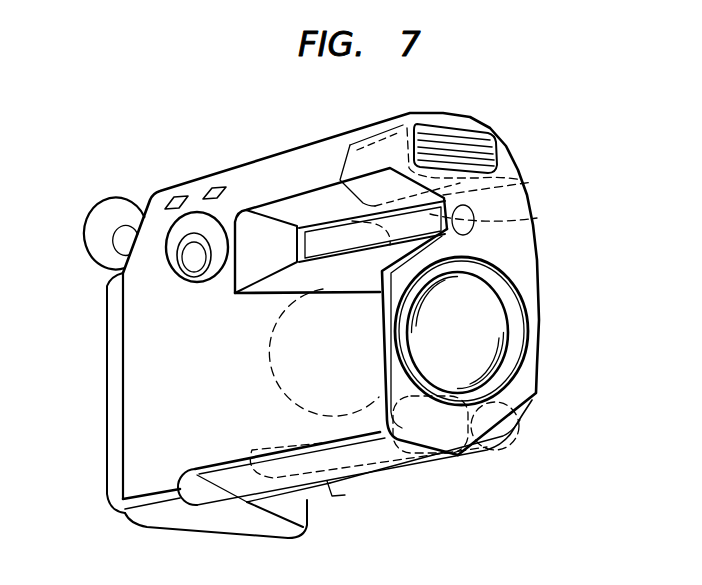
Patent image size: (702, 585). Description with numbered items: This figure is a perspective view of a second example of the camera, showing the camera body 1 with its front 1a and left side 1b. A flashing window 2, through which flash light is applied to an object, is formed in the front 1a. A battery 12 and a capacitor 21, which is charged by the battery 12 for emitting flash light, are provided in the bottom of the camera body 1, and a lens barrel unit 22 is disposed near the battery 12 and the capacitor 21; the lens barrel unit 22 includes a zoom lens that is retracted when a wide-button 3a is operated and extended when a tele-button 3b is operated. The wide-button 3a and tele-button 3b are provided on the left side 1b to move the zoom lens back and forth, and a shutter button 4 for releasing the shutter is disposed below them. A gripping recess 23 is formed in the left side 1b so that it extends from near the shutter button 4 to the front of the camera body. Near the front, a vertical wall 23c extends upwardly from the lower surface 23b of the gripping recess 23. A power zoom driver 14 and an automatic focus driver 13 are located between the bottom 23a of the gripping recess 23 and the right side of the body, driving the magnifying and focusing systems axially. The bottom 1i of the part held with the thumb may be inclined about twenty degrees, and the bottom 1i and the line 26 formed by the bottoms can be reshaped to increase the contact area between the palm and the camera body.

The camera body 1 is at (285, 152).
The front of the camera body 1a is at (527, 272).
The left side of the camera body 1b is at (147, 407).
The bottom of the camera body part held with the thumb 1i is at (243, 490).
The flashing window 2 is at (468, 138).
The wide-button 3a is at (173, 196).
The tele-button 3b is at (213, 189).
The shutter button 4 is at (192, 257).
The battery 12 is at (432, 422).
The automatic focus driver 13 is at (530, 218).
The power zoom driver 14 is at (520, 180).
The capacitor 21 is at (513, 437).
The lens barrel unit 22 is at (495, 326).
The gripping recess 23 is at (323, 205).
The bottom of the gripping recess 23a is at (325, 253).
The lower surface of the gripping recess 23b is at (280, 285).
The vertical wall 23c is at (370, 262).
The line formed by the bottoms 26 is at (310, 497).